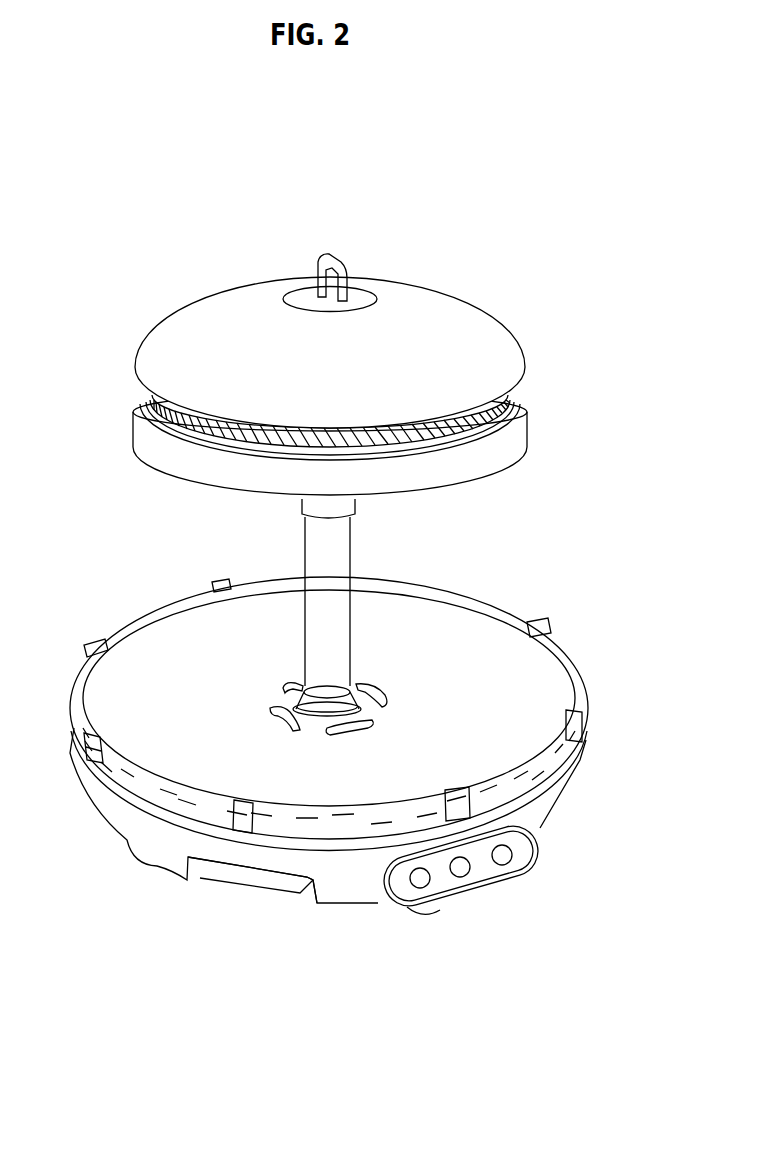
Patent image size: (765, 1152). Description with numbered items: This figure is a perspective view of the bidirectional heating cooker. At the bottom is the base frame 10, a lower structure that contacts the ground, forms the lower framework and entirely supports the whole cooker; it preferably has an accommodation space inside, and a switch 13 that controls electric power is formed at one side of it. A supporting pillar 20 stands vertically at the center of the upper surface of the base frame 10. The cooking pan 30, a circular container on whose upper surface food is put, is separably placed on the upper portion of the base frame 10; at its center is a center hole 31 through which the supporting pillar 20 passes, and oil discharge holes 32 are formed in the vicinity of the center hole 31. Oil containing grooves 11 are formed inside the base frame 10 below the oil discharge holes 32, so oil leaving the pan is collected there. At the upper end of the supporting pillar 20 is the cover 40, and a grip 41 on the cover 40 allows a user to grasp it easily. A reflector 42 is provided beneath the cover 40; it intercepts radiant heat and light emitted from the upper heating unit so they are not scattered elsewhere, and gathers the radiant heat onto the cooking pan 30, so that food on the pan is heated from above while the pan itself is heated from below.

The base frame 10 is at (560, 813).
The oil containing grooves 11 is at (245, 875).
The switch 13 is at (498, 861).
The supporting pillar 20 is at (303, 540).
The cooking pan 30 is at (578, 652).
The center hole 31 is at (351, 683).
The oil discharge holes 32 is at (282, 687).
The cover 40 is at (208, 290).
The grip 41 is at (318, 253).
The reflector 42 is at (443, 443).